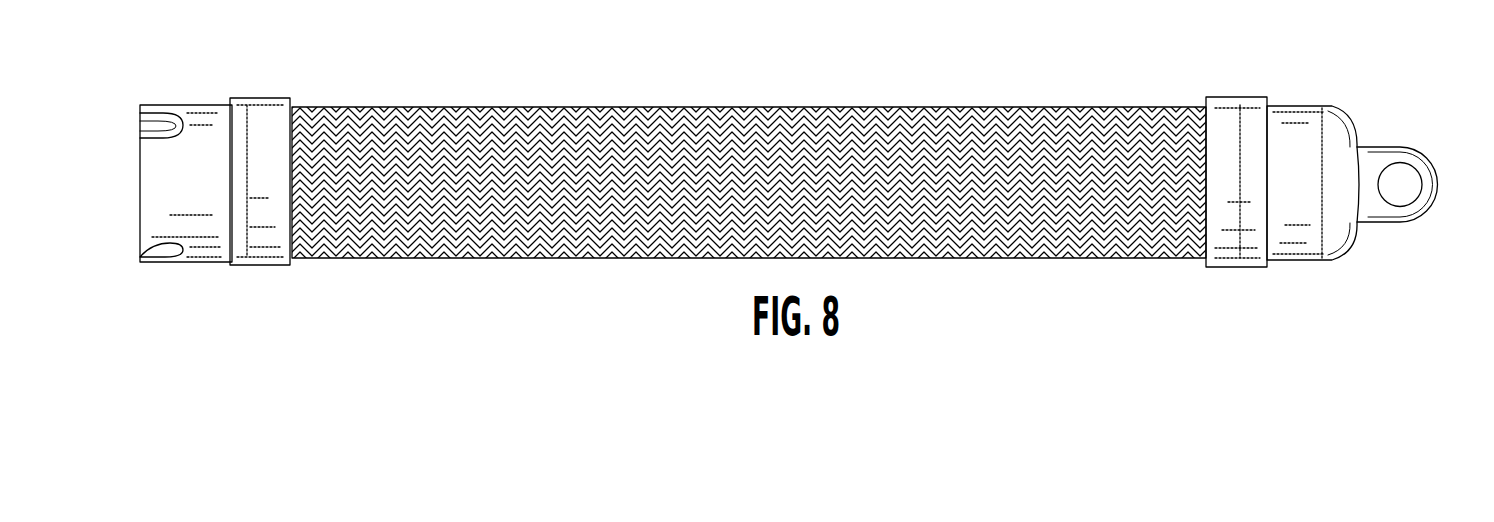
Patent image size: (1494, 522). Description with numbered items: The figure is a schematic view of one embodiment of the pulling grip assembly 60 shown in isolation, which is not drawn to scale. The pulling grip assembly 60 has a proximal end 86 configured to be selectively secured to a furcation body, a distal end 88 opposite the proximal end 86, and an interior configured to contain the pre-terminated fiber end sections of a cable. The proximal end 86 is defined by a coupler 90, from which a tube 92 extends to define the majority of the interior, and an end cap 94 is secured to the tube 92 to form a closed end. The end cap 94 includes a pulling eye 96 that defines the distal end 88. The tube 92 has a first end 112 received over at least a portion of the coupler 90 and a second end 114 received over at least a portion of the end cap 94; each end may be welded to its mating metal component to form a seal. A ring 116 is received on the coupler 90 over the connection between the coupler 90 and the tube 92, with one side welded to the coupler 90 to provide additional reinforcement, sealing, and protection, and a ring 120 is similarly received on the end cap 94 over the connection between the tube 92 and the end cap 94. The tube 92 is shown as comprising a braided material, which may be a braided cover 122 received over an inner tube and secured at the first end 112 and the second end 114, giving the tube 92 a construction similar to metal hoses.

The pulling grip assembly 60 is at (389, 62).
The proximal end 86 is at (138, 113).
The distal end 88 is at (1427, 163).
The coupler 90 is at (202, 96).
The tube 92 is at (544, 101).
The end cap 94 is at (1300, 96).
The pulling eye 96 is at (1400, 185).
The first end 112 is at (245, 240).
The second end 114 is at (1238, 235).
The ring 116 is at (268, 98).
The ring 120 is at (1240, 100).
The braided cover 122 is at (735, 120).